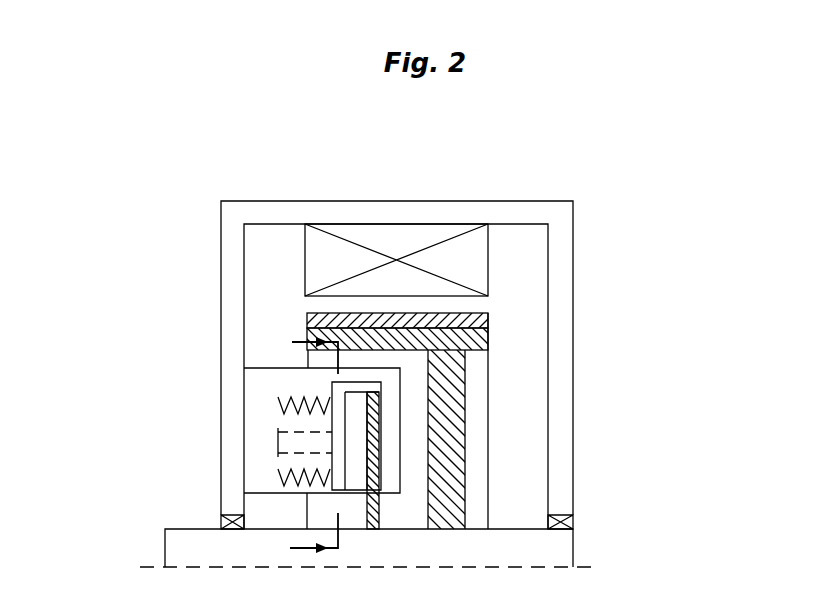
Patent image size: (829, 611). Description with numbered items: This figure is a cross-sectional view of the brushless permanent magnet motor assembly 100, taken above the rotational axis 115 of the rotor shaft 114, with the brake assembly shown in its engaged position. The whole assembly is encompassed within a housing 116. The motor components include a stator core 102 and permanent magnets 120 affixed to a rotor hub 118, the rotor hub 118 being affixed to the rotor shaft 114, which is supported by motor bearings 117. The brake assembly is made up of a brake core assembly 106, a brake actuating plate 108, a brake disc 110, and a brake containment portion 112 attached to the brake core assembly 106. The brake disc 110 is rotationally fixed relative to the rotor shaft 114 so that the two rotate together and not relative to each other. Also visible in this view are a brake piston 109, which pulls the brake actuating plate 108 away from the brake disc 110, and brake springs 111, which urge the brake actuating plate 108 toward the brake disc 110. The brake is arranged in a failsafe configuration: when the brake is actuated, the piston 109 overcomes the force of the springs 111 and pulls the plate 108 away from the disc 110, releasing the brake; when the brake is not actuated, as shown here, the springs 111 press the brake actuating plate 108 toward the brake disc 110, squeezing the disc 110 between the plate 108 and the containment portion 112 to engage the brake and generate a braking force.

The motor assembly 100 is at (630, 172).
The stator core 102 is at (405, 238).
The brake core assembly 106 is at (257, 383).
The brake actuating plate 108 is at (358, 400).
The brake piston 109 is at (332, 440).
The brake disc 110 is at (377, 450).
The brake springs 111 is at (330, 404).
The brake containment portion 112 is at (392, 423).
The rotor shaft 114 is at (560, 550).
The rotational axis 115 is at (157, 566).
The housing 116 is at (562, 325).
The motor bearings 117 is at (570, 518).
The rotor hub 118 is at (490, 343).
The permanent magnets 120 is at (490, 313).